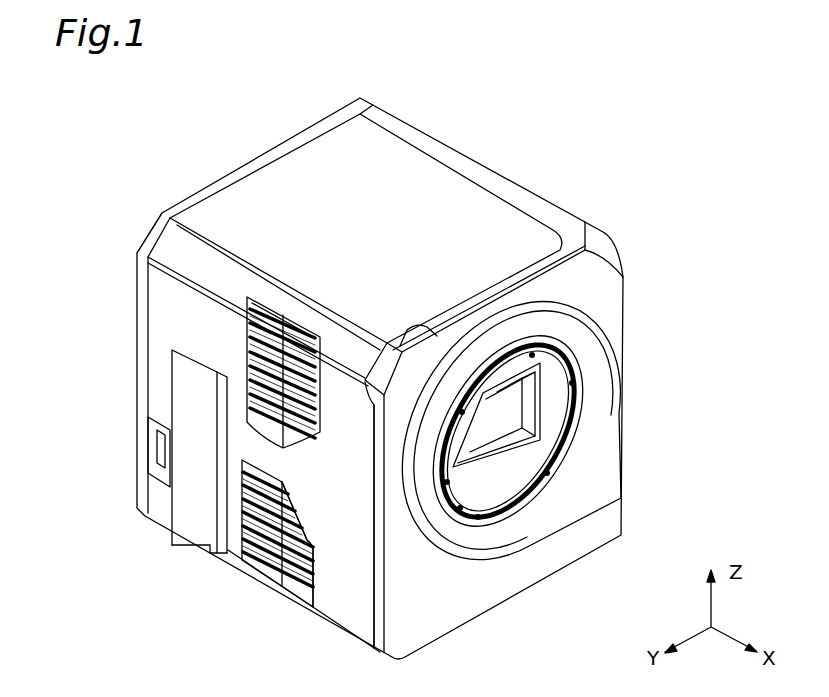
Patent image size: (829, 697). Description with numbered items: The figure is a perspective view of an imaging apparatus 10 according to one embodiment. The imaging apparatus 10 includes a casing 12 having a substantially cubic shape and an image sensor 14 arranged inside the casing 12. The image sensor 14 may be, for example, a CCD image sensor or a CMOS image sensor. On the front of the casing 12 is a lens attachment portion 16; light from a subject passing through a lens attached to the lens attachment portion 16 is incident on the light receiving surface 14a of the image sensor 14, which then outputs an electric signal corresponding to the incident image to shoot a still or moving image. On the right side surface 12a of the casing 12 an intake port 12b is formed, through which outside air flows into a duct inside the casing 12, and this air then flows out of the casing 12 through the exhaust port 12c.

The imaging apparatus 10 is at (427, 369).
The casing 12 is at (371, 230).
The right side surface 12a is at (340, 607).
The intake port 12b is at (262, 558).
The exhaust port 12c is at (256, 351).
The image sensor 14 is at (560, 431).
The light receiving surface 14a is at (513, 412).
The lens attachment portion 16 is at (565, 362).